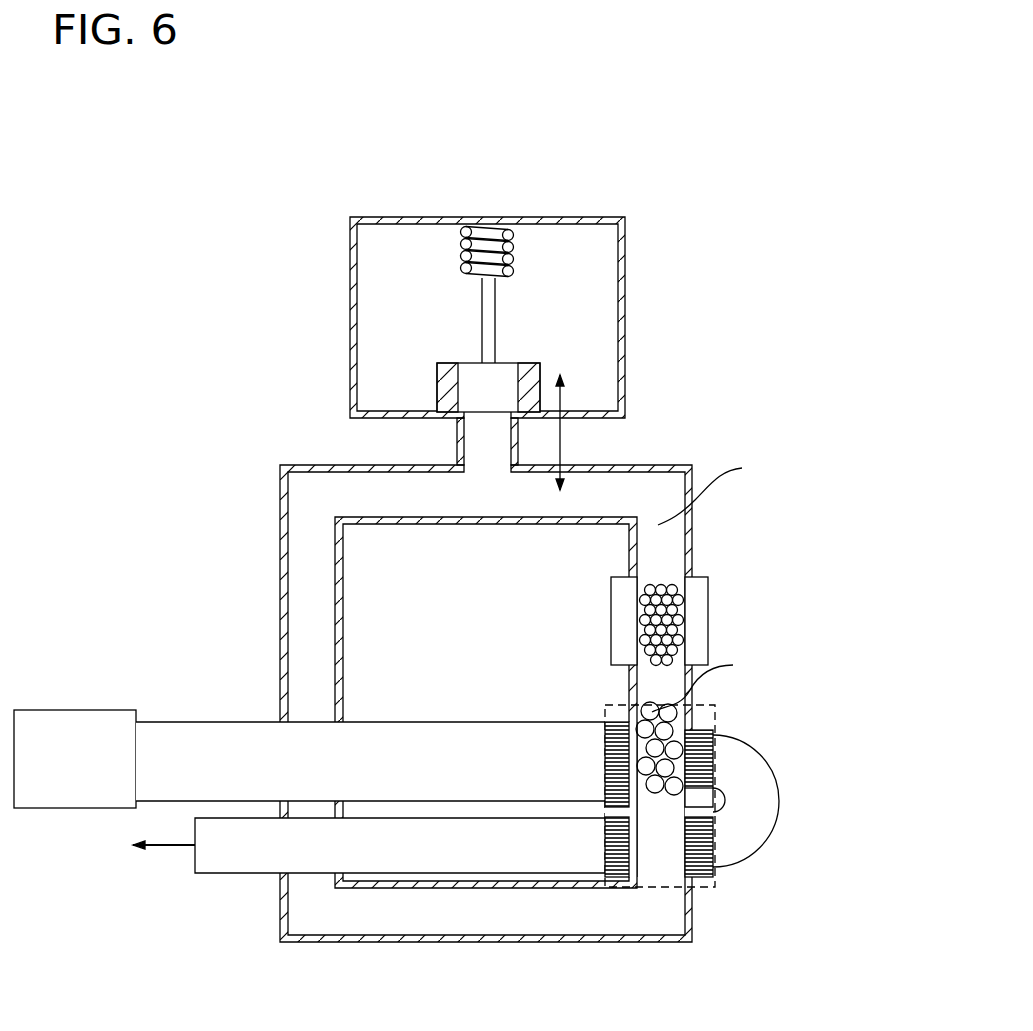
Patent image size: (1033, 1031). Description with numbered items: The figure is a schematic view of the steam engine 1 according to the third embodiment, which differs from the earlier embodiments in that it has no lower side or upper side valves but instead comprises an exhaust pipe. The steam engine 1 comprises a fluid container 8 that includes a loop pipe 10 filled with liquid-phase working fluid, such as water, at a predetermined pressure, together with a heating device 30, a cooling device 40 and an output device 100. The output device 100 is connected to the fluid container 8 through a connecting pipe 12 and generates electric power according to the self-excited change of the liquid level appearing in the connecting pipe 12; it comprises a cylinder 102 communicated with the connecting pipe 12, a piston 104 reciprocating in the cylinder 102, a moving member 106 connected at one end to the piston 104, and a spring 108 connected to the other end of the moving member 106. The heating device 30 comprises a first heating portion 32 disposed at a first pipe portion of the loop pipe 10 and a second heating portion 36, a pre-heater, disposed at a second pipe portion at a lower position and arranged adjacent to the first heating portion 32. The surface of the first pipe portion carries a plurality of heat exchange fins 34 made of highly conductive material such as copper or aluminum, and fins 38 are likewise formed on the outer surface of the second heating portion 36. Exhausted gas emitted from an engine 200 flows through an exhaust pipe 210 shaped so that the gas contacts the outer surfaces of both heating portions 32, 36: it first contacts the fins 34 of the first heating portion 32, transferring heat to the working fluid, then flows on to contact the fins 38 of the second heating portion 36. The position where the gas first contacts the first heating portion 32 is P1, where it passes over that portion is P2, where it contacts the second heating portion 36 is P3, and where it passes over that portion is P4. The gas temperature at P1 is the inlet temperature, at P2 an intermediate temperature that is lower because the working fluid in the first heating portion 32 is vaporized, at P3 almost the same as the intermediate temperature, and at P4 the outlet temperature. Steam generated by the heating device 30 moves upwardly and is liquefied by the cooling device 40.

The steam engine 1 is at (660, 280).
The fluid container 8 is at (705, 437).
The loop pipe 10 is at (593, 465).
The connecting pipe 12 is at (457, 440).
The heating device 30 is at (703, 703).
The first heating portion 32 is at (687, 735).
The heat exchange fins 34 is at (693, 728).
The second heating portion 36 is at (700, 905).
The fins 38 is at (710, 872).
The cooling device 40 is at (695, 620).
The output device 100 is at (545, 203).
The cylinder 102 is at (437, 382).
The piston 104 is at (470, 370).
The moving member 106 is at (480, 288).
The spring 108 is at (463, 240).
The engine 200 is at (85, 710).
The exhaust pipe 210 is at (432, 722).
The position P1 is at (605, 758).
The position P2 is at (713, 735).
The position P3 is at (713, 843).
The position P4 is at (605, 850).